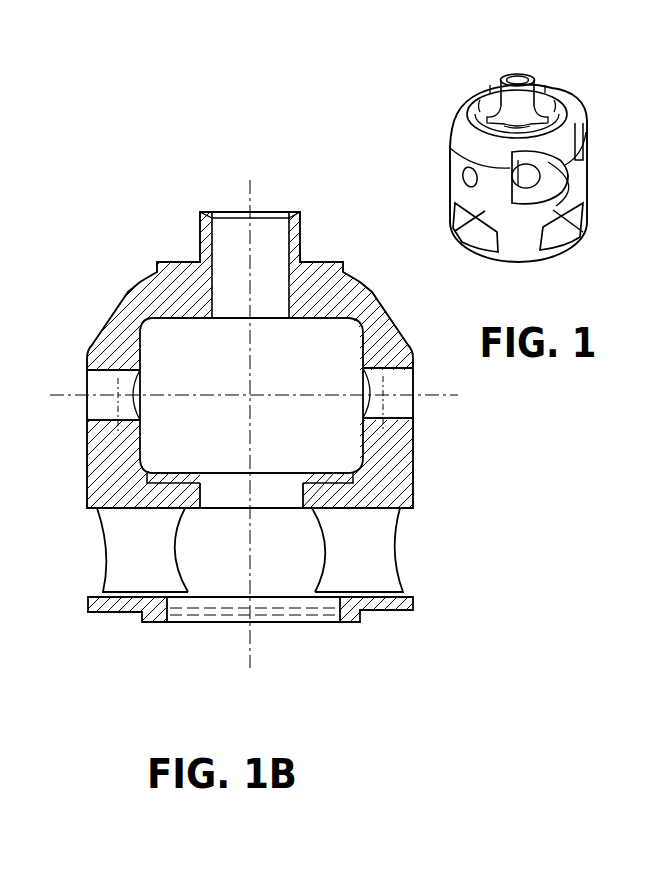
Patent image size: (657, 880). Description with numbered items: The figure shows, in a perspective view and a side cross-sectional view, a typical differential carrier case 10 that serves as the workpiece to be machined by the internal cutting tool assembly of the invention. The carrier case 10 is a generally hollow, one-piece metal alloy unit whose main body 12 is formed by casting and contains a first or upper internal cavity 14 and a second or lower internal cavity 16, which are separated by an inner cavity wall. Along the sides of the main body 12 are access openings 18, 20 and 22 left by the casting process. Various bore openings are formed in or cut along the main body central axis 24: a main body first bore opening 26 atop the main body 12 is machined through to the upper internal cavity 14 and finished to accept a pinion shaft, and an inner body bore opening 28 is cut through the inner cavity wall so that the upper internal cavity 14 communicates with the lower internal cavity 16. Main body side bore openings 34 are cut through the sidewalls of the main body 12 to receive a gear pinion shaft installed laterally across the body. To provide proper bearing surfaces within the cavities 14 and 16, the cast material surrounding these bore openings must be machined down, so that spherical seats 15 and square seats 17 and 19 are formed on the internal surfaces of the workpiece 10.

In FIG. 1B, the differential carrier case 10 is at (146, 131).
In FIG. 1B, the main body 12 is at (415, 467).
In FIG. 1B, the first or upper internal cavity 14 is at (305, 364).
In FIG. 1B, the spherical seats 15 is at (134, 362).
In FIG. 1B, the second or lower internal cavity 16 is at (289, 558).
In FIG. 1, the second or lower internal cavity 16 is at (553, 227).
In FIG. 1B, the square seats 17 is at (193, 321).
In FIG. 1, the access opening 18 is at (582, 128).
In FIG. 1B, the square seat 19 is at (218, 596).
In FIG. 1B, the access opening 20 is at (73, 565).
In FIG. 1, the access opening 20 is at (468, 245).
In FIG. 1, the access opening 22 is at (560, 250).
In FIG. 1B, the main body central axis 24 is at (253, 641).
In FIG. 1B, the main body first bore opening 26 is at (213, 225).
In FIG. 1B, the inner body bore opening 28 is at (208, 489).
In FIG. 1, the inner body bore opening 28 is at (540, 175).
In FIG. 1B, the main body side bore openings 34 is at (100, 371).
In FIG. 1, the main body side bore openings 34 is at (463, 175).